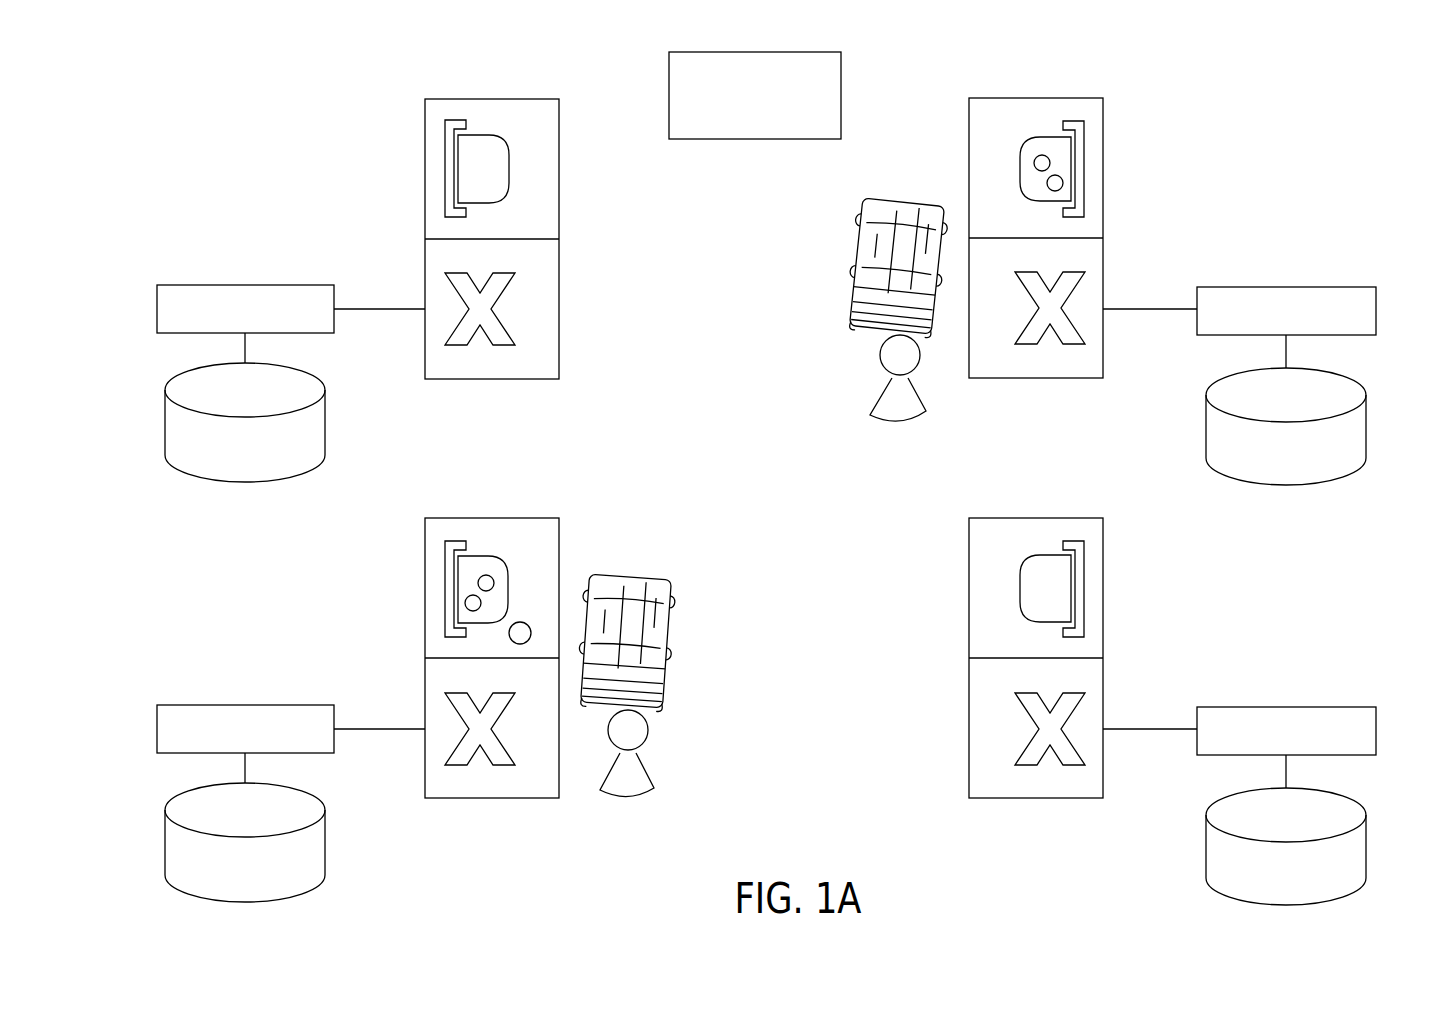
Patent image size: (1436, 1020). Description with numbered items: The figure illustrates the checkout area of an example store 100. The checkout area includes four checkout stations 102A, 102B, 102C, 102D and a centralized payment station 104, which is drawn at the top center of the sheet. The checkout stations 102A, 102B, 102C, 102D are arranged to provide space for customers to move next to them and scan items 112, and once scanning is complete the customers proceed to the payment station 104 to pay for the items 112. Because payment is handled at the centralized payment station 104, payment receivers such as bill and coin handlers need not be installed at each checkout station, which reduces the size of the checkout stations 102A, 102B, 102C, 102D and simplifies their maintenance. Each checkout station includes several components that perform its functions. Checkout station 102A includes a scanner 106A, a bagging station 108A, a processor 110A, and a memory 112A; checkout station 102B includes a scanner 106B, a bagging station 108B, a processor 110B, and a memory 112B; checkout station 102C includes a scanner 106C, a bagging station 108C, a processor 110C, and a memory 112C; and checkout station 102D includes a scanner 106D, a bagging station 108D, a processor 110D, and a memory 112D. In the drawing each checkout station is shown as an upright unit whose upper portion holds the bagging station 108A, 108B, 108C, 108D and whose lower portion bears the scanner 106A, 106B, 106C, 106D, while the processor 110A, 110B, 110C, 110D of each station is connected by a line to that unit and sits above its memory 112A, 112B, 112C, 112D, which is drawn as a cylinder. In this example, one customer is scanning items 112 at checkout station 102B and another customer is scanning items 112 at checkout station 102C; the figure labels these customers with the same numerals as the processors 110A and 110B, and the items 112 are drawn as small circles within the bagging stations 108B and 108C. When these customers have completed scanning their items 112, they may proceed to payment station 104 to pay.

The store 100 is at (730, 33).
The checkout station 102A is at (444, 239).
The checkout station 102B is at (403, 664).
The checkout station 102C is at (1139, 275).
The checkout station 102D is at (1140, 664).
The payment station 104 is at (752, 140).
The scanner 106A is at (547, 303).
The scanner 106B is at (470, 783).
The scanner 106C is at (1060, 363).
The scanner 106D is at (1013, 775).
The bagging station 108A is at (547, 140).
The bagging station 108B is at (529, 532).
The bagging station 108C is at (1091, 140).
The bagging station 108D is at (1032, 530).
The processor 110A is at (157, 309).
The processor 110B is at (157, 729).
The processor 110C is at (1376, 310).
The processor 110D is at (1376, 730).
The items 112 is at (481, 603).
The memory 112A is at (165, 421).
The memory 112B is at (165, 841).
The memory 112C is at (1368, 424).
The memory 112D is at (1368, 844).